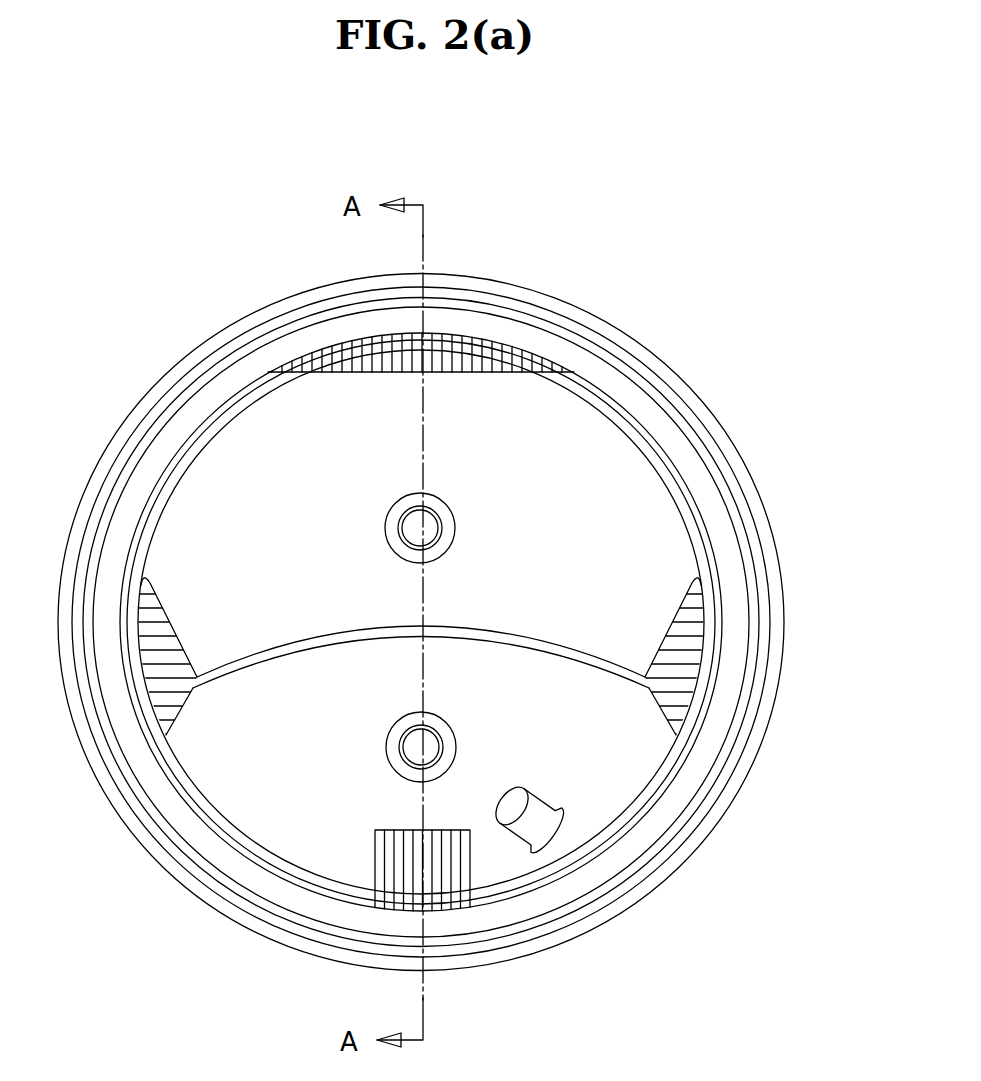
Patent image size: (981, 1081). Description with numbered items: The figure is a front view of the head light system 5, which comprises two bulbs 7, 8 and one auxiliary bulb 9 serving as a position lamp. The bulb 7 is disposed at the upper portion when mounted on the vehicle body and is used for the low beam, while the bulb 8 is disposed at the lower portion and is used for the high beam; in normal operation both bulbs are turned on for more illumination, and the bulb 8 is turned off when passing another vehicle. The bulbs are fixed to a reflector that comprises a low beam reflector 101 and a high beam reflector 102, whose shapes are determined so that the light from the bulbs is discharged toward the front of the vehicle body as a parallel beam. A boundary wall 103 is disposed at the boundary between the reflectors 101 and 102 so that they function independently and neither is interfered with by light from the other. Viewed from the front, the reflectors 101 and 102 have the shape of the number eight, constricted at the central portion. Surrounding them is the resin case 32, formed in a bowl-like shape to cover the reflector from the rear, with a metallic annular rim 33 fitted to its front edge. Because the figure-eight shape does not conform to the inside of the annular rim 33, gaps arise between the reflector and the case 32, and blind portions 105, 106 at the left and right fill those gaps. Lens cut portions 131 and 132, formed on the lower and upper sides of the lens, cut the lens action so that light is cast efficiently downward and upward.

The head light system 5 is at (425, 658).
The bulb 7 is at (430, 528).
The bulb 8 is at (428, 748).
The auxiliary bulb 9 is at (535, 807).
The case 32 is at (758, 750).
The annular rim 33 is at (672, 855).
The low beam reflector 101 is at (300, 525).
The high beam reflector 102 is at (316, 768).
The boundary wall 103 is at (511, 630).
The blind portion 105 is at (160, 673).
The blind portion 106 is at (687, 650).
The lens cut portion 131 is at (472, 868).
The lens cut portion 132 is at (520, 348).